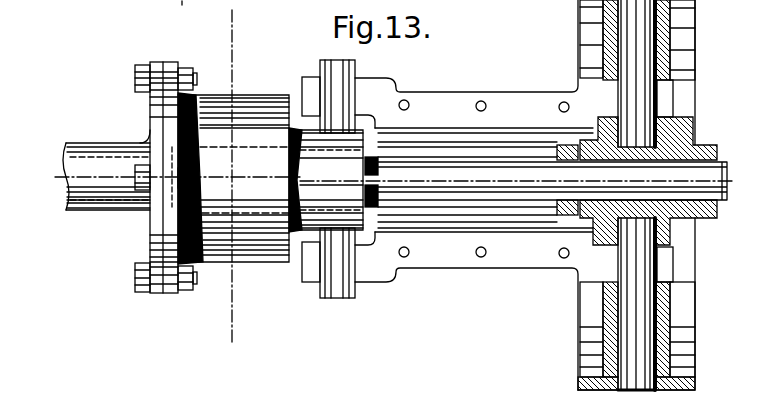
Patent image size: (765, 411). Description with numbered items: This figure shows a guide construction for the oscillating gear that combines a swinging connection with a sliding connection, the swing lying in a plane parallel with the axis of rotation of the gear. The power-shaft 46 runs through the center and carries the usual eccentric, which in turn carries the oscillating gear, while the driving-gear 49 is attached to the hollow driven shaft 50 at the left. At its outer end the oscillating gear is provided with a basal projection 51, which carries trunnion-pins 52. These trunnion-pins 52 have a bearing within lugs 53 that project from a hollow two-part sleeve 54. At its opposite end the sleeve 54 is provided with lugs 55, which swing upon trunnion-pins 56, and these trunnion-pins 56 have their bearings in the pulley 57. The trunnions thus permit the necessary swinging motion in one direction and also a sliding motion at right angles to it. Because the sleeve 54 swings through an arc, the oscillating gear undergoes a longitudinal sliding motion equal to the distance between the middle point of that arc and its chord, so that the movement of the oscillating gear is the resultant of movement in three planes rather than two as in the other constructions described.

The power-shaft 46 is at (727, 181).
The driving-gear 49 is at (212, 177).
The hollow driven shaft 50 is at (106, 168).
The basal projection 51 is at (333, 180).
The trunnion-pins 52 is at (337, 181).
The lugs 53 is at (342, 179).
The hollow two-part sleeve 54 is at (466, 195).
The lugs 55 is at (620, 97).
The trunnion-pins 56 is at (665, 88).
The pulley 57 is at (688, 33).